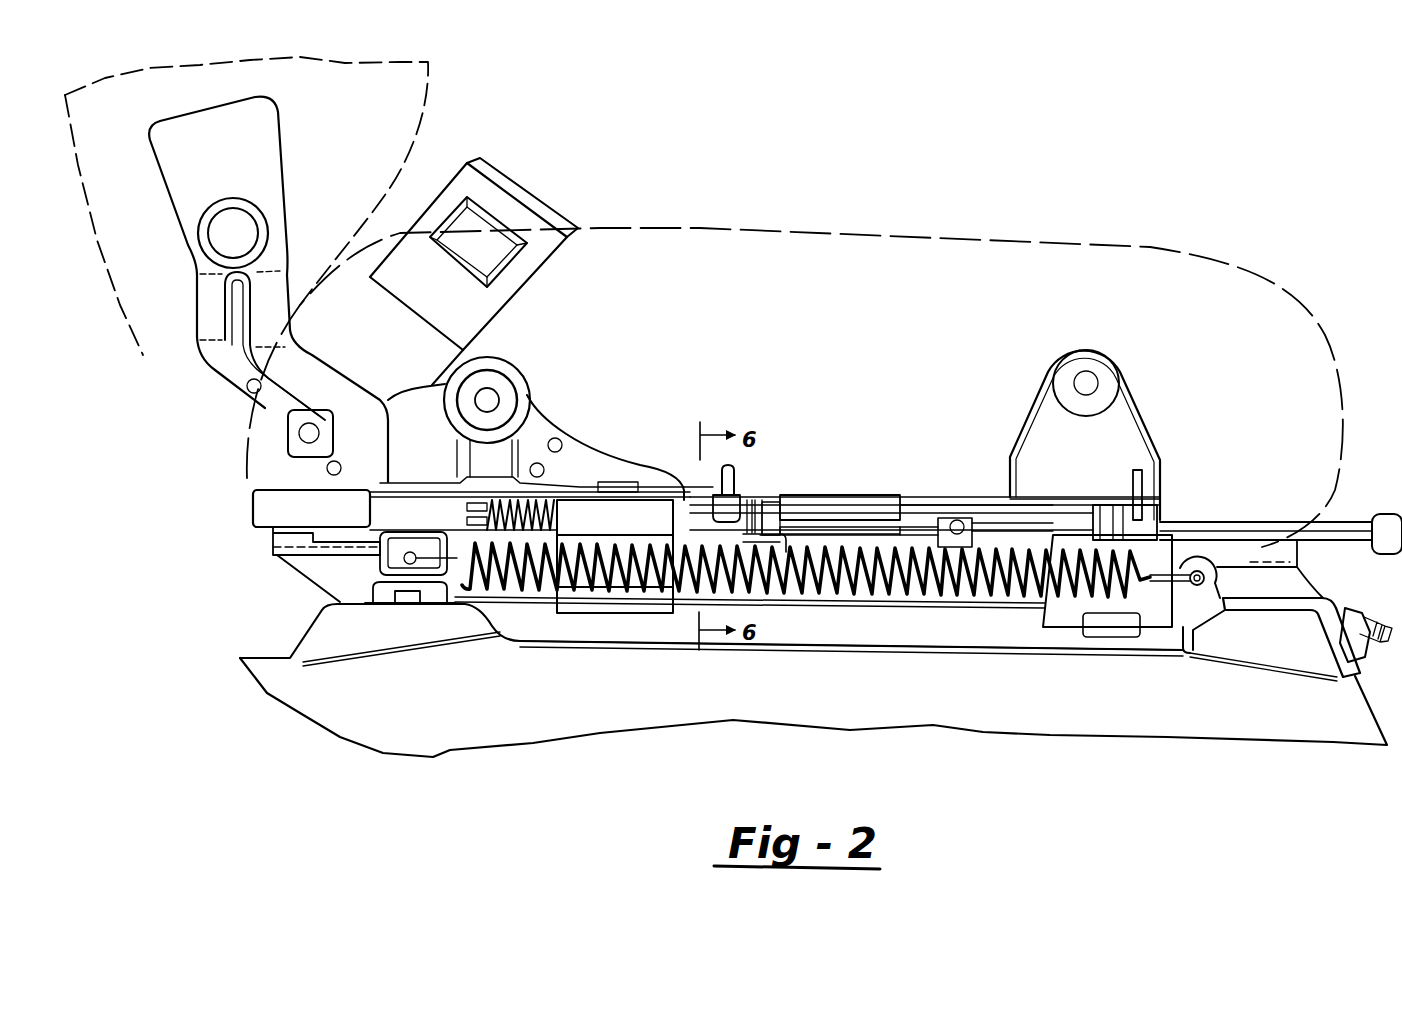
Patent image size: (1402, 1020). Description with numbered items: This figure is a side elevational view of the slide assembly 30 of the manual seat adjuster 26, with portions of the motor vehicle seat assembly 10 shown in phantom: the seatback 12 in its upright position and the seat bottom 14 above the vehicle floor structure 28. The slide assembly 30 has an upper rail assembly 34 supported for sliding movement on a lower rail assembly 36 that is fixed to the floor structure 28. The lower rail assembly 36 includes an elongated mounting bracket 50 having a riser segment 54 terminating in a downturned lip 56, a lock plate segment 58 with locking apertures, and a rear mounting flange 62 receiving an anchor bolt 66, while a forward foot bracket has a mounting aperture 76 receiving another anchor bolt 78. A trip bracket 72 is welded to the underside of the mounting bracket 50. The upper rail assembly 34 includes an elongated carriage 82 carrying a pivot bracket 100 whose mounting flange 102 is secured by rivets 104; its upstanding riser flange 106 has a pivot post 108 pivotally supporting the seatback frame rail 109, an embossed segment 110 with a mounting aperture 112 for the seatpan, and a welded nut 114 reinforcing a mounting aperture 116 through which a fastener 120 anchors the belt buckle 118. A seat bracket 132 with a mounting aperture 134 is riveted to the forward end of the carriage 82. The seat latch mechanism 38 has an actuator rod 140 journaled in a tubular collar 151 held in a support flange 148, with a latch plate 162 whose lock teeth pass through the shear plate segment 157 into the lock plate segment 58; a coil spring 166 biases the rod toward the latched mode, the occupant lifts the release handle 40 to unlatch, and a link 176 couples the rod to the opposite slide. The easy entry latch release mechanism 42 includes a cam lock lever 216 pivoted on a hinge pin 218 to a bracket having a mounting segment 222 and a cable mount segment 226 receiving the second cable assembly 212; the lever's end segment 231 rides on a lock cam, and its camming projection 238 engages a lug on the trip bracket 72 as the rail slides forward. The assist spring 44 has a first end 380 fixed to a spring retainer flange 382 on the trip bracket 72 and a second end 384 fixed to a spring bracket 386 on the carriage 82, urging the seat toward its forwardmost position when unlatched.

The motor vehicle seat assembly 10 is at (785, 152).
The seatback 12 is at (425, 108).
The seat bottom 14 is at (930, 247).
The manual seat adjuster 26 is at (1185, 440).
The floor structure 28 is at (980, 712).
The slide assembly 30 is at (882, 481).
The upper rail assembly 34 is at (962, 495).
The lower rail assembly 36 is at (258, 579).
The seat latch mechanism 38 is at (585, 620).
The release handle 40 is at (1378, 510).
The easy entry latch release mechanism 42 is at (768, 486).
The assist spring 44 is at (1063, 603).
The mounting bracket 50 is at (312, 580).
The riser segment 54 is at (273, 537).
The downturned lip 56 is at (257, 503).
The lock plate segment 58 is at (527, 592).
The rear mounting flange 62 is at (430, 600).
The anchor bolt 66 is at (400, 600).
The trip bracket 72 is at (1032, 617).
The mounting aperture 76 is at (1290, 607).
The anchor bolt 78 is at (1362, 672).
The carriage 82 is at (1205, 515).
The pivot bracket 100 is at (548, 416).
The mounting flange 102 is at (603, 482).
The rivets 104 is at (273, 472).
The upstanding riser flange 106 is at (212, 352).
The pivot post 108 is at (228, 232).
The seatback frame rail 109 is at (277, 190).
The embossed segment 110 is at (508, 395).
The mounting aperture 112 is at (487, 400).
The nut 114 is at (307, 427).
The mounting aperture 116 is at (323, 433).
The belt buckle 118 is at (545, 200).
The fastener 120 is at (313, 430).
The seat bracket 132 is at (1145, 403).
The mounting aperture 134 is at (1092, 383).
The actuator rod 140 is at (1250, 527).
The support flange 148 is at (1110, 500).
The tubular collar 151 is at (1113, 510).
The shear plate segment 157 is at (610, 600).
The latch plate 162 is at (625, 532).
The coil spring 166 is at (540, 495).
The link 176 is at (1133, 480).
The second cable assembly 212 is at (742, 478).
The cam lock lever 216 is at (867, 603).
The hinge pin 218 is at (843, 527).
The mounting segment 222 is at (843, 497).
The cable mount segment 226 is at (690, 597).
The end segment 231 is at (797, 596).
The camming projection 238 is at (907, 603).
The first end 380 is at (1160, 610).
The spring retainer flange 382 is at (1173, 630).
The second end 384 is at (453, 604).
The spring bracket 386 is at (372, 565).